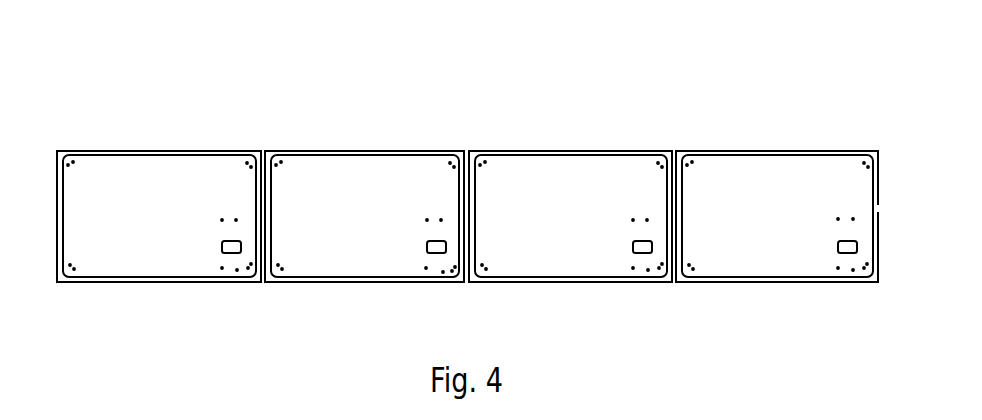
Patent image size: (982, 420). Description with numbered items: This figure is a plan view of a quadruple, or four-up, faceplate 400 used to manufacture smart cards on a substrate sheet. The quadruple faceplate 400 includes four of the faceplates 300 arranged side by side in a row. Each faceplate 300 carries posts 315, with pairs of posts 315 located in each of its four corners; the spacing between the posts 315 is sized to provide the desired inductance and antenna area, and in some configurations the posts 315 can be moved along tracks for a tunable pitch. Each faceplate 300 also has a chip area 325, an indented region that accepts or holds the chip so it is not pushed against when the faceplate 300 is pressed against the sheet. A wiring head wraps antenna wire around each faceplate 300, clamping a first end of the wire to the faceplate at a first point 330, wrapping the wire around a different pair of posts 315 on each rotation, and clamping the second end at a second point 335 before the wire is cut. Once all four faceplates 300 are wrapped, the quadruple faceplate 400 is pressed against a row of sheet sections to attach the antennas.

The 4-up faceplate 400 is at (268, 115).
The faceplate 300 is at (142, 153).
The posts 315 is at (247, 270).
The chip area 325 is at (229, 254).
The first point 330 is at (426, 270).
The second point 335 is at (443, 274).